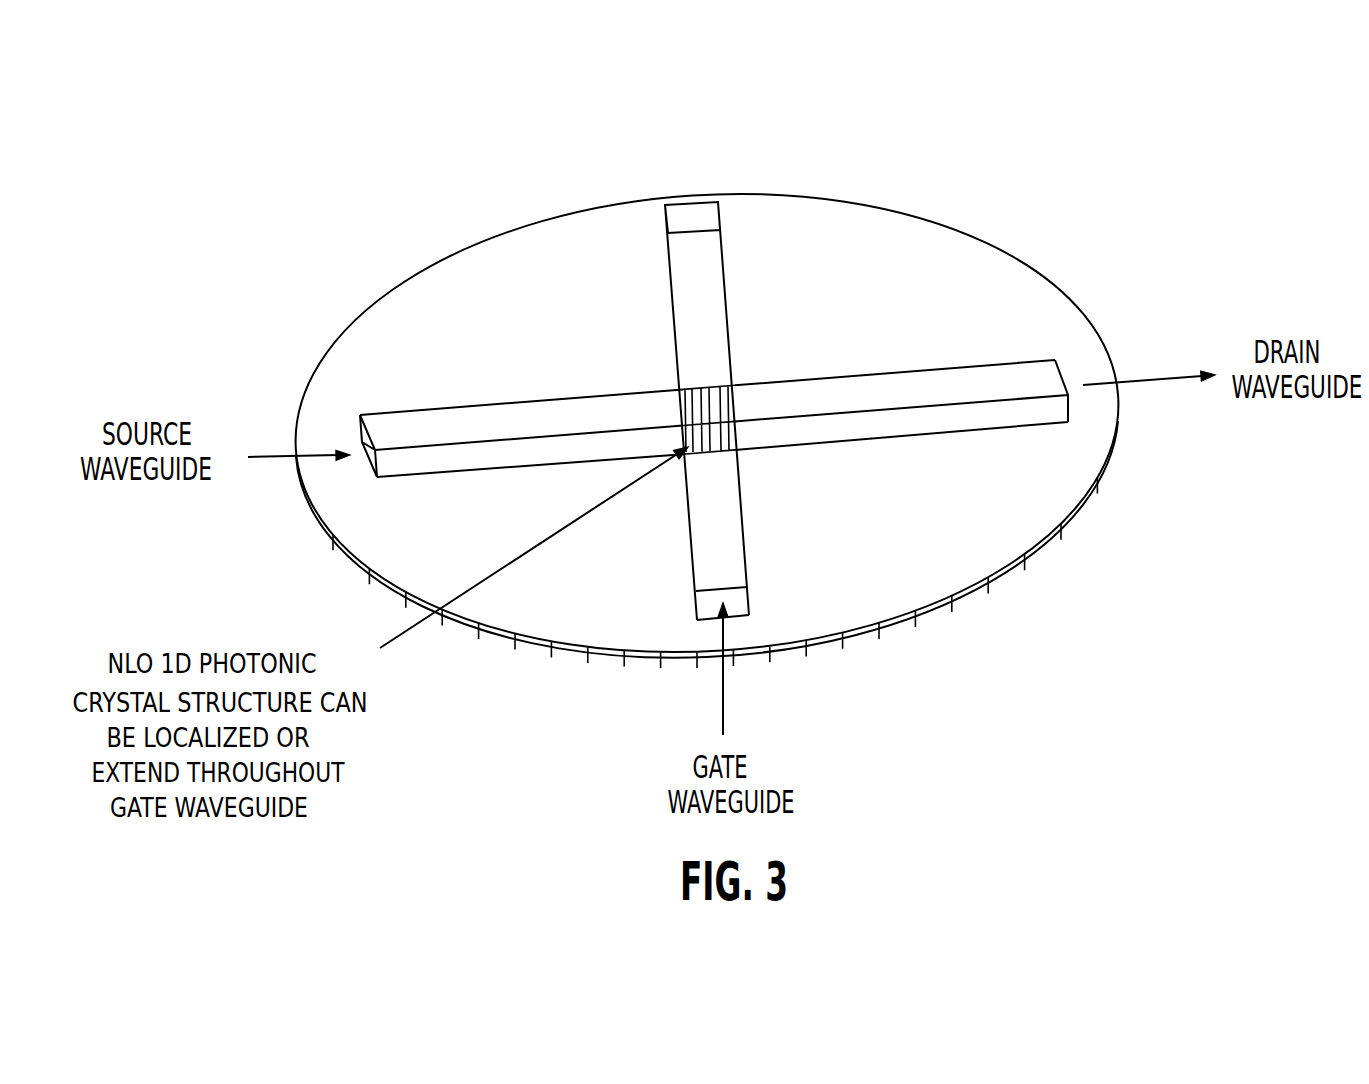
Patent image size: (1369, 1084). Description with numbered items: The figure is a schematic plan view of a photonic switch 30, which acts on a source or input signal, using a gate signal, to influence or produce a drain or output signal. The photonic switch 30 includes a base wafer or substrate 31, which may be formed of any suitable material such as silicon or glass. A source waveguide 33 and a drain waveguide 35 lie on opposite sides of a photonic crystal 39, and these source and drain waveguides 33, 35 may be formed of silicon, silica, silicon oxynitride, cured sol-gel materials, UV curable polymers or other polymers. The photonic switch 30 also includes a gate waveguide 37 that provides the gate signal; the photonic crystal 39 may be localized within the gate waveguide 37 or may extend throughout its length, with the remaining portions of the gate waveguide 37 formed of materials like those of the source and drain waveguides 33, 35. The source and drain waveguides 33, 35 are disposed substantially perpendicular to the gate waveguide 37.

The photonic switch 30 is at (1107, 567).
The substrate 31 is at (878, 277).
The source waveguide 33 is at (408, 418).
The drain waveguide 35 is at (1032, 380).
The gate waveguide 37 is at (708, 567).
The photonic crystal 39 is at (732, 383).